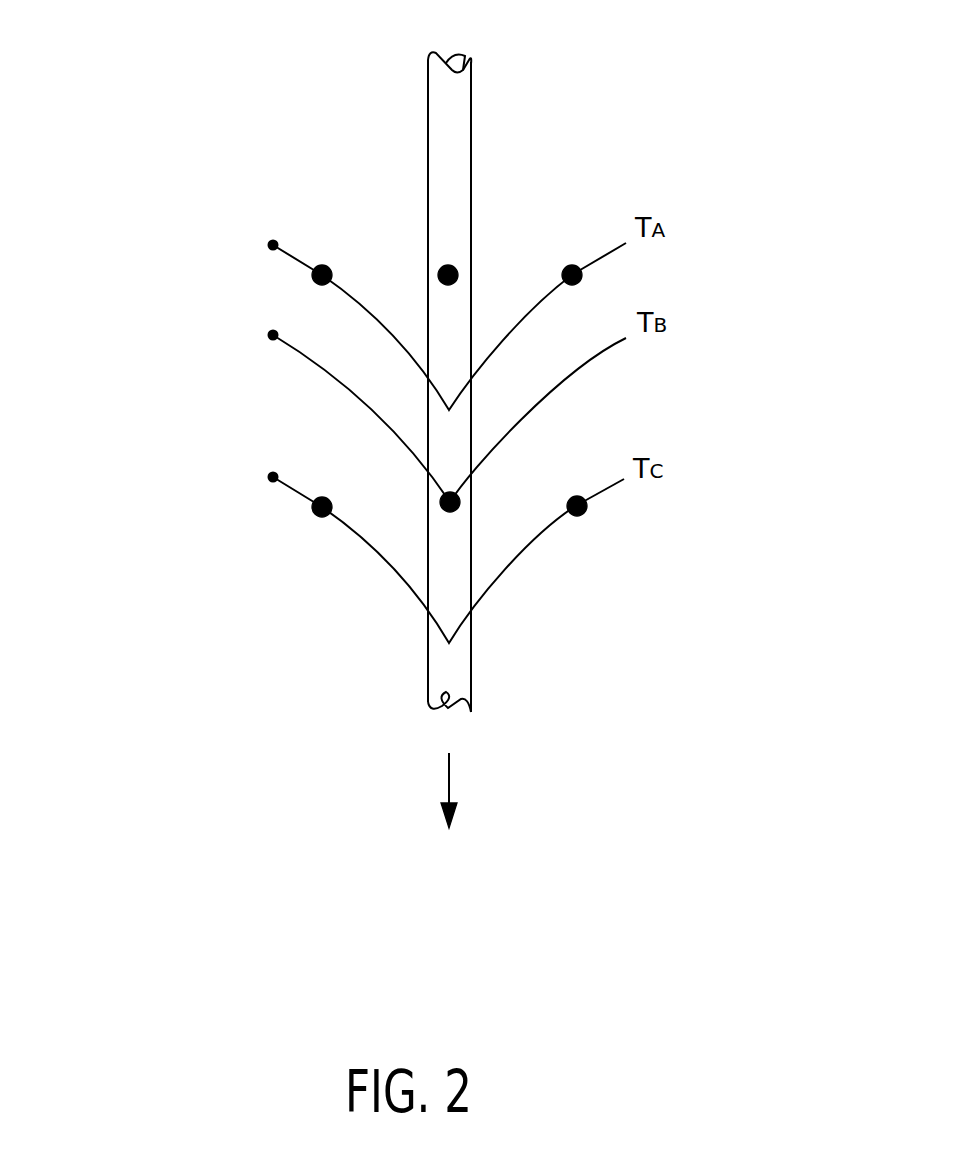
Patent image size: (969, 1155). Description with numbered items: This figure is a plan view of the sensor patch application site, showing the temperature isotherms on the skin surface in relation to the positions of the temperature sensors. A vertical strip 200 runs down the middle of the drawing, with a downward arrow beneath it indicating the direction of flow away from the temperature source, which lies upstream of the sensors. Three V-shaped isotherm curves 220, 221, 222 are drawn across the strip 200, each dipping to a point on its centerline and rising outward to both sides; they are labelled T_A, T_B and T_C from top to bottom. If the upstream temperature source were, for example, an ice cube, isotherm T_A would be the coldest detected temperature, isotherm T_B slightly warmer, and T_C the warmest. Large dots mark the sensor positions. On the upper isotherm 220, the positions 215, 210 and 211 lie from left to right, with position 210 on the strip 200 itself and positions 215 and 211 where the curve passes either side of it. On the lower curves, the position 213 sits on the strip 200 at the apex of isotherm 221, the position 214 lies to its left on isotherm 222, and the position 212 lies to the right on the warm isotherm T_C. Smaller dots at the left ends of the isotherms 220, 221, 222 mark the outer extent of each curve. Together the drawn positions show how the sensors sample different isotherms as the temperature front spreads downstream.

The tube / conduit 200 is at (448, 165).
The temperature sensor position 210 is at (448, 275).
The temperature sensor position 211 is at (575, 278).
The temperature sensor position 212 is at (579, 509).
The temperature sensor position 213 is at (448, 505).
The temperature sensor 214 is at (320, 515).
The temperature sensor position 215 is at (324, 266).
The temperature profile A 220 is at (273, 246).
The temperature profile B 221 is at (273, 336).
The temperature sensor position 222 is at (273, 478).